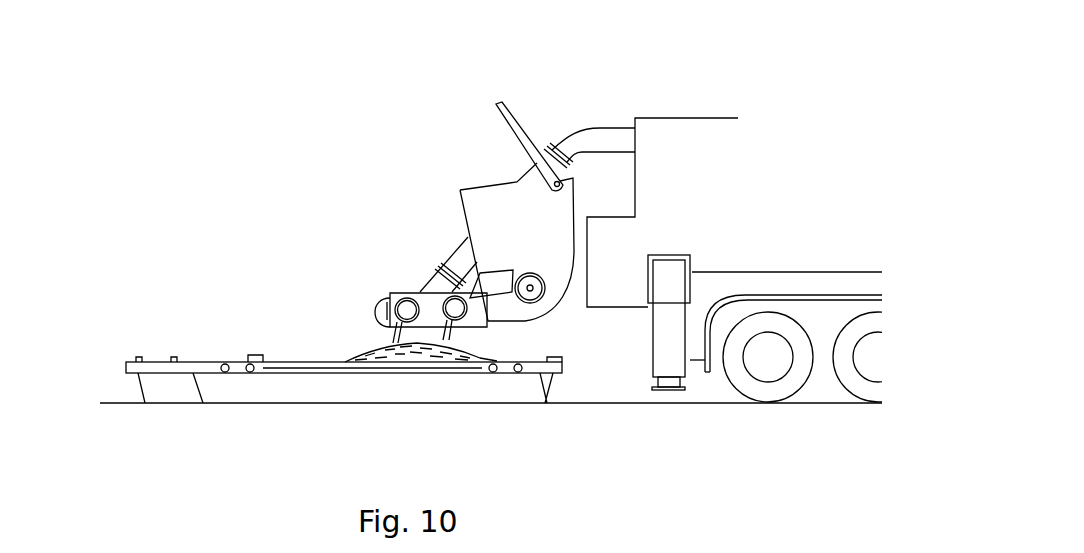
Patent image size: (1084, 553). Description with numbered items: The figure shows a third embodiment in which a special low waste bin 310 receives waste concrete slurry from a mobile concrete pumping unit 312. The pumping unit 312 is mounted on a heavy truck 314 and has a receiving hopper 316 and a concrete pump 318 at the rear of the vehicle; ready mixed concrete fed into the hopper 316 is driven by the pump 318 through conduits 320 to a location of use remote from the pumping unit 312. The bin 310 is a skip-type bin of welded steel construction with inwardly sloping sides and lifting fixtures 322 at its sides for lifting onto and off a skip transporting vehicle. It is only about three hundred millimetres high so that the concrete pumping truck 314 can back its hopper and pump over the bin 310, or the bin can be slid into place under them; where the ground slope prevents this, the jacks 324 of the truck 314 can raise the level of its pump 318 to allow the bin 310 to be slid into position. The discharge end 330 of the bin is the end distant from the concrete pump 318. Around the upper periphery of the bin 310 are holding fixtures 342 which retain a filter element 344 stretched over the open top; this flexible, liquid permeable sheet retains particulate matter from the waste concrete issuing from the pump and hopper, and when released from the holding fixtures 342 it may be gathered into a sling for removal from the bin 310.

The waste bin 310 is at (188, 336).
The mobile concrete pumping unit 312 is at (435, 186).
The heavy truck 314 is at (603, 90).
The receiving hopper 316 is at (496, 181).
The concrete pump 318 is at (384, 286).
The conduits 320 is at (587, 140).
The lifting fixtures 322 is at (240, 381).
The jacks 324 is at (669, 350).
The discharge end 330 is at (109, 372).
The holding fixtures 342 is at (155, 374).
The filter element 344 is at (315, 356).